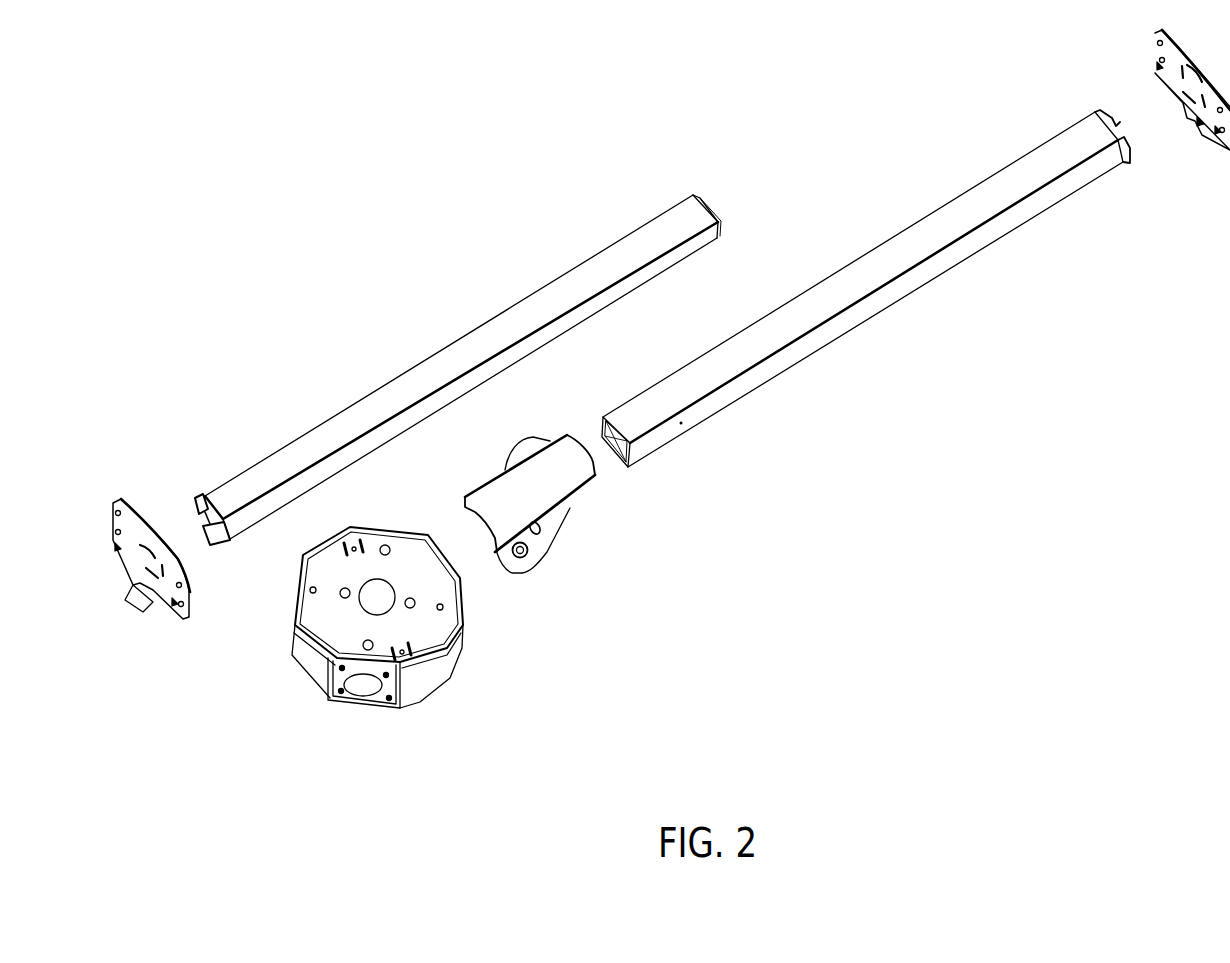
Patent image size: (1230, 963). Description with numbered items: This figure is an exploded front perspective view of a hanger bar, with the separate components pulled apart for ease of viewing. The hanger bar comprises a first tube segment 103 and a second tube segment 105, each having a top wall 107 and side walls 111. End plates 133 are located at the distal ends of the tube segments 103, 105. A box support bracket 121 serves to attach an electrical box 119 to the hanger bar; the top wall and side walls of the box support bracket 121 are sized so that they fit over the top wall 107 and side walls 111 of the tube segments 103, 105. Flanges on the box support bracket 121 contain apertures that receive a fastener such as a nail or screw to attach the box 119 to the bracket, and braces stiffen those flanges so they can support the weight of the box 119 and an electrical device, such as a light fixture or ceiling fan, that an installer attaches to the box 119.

The first tube segment 103 is at (388, 343).
The second tube segment 105 is at (947, 168).
The top wall 107 is at (662, 318).
The side walls 111 is at (633, 283).
The box 119 is at (427, 628).
The box support bracket 121 is at (540, 480).
The end plates 133 is at (1207, 130).